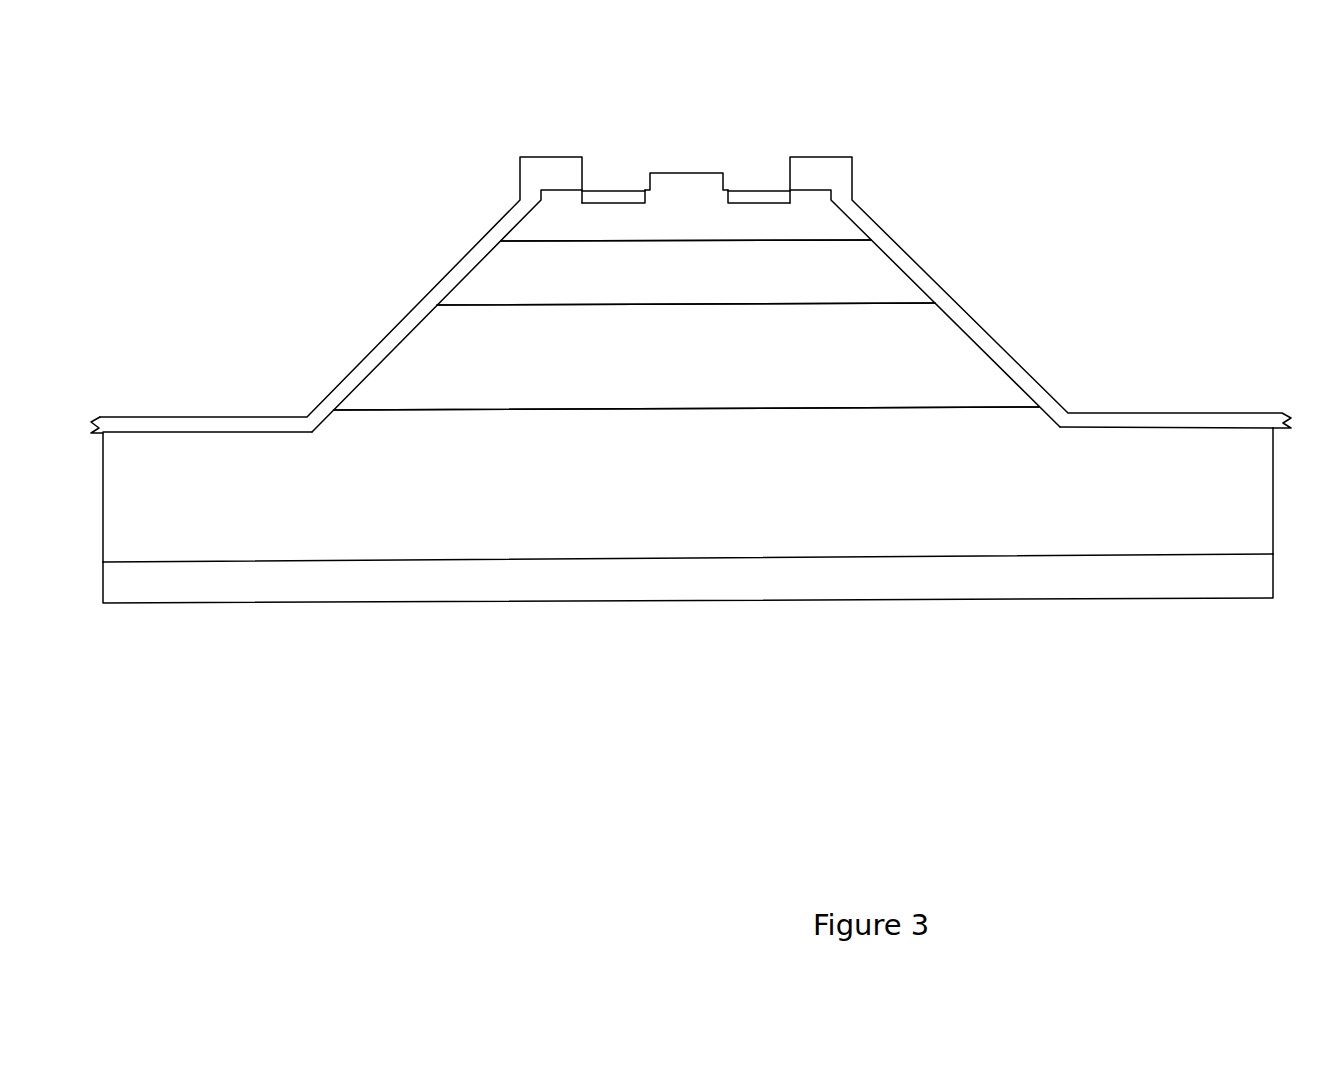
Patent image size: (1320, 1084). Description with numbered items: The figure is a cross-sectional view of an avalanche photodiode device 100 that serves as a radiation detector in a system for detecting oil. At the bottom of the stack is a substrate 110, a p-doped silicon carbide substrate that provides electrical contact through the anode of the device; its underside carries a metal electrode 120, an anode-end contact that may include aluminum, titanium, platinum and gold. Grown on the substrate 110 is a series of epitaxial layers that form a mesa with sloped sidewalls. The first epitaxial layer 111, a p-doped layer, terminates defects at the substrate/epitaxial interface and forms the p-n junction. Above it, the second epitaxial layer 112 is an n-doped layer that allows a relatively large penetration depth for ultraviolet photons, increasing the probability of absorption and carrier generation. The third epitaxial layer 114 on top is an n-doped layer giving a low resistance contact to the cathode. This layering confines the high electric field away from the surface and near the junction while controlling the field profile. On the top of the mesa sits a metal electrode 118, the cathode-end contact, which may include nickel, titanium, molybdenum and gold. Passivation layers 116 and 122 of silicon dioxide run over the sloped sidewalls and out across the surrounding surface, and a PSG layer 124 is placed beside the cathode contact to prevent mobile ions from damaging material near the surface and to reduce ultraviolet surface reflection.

The semiconductor device 100 is at (530, 764).
The substrate 110 is at (688, 484).
The first epitaxial layer 111 is at (686, 356).
The second epitaxial layer 112 is at (686, 272).
The third epitaxial layer 114 is at (686, 311).
The passivation layer 116 is at (343, 358).
The metal electrode 118 is at (687, 145).
The metal electrode 120 is at (804, 591).
The passivation layer 122 is at (983, 308).
The PSG layer 124 is at (764, 174).